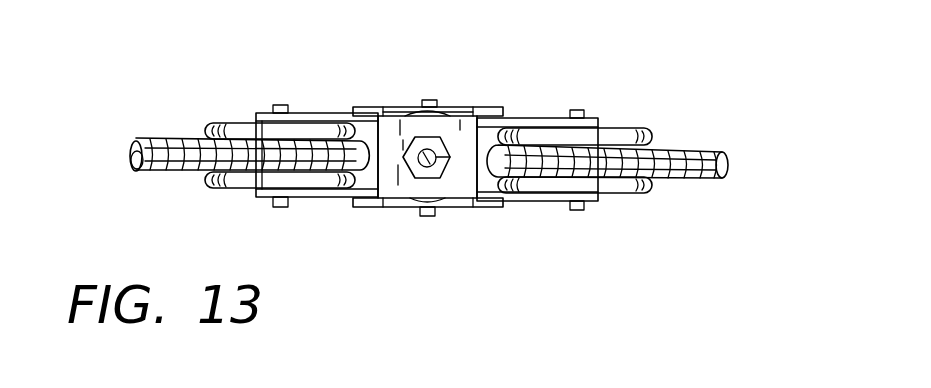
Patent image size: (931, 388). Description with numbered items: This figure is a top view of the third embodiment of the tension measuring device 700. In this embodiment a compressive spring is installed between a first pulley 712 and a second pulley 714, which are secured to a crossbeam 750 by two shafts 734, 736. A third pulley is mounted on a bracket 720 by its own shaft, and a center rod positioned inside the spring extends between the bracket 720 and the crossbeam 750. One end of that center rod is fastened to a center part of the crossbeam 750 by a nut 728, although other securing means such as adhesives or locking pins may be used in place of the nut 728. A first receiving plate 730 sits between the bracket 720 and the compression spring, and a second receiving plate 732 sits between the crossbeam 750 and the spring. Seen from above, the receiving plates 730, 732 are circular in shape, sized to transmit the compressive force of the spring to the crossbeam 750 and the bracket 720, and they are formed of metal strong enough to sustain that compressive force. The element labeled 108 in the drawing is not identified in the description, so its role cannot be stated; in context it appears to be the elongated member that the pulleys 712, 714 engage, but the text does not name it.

The tension measuring device 700 is at (455, 139).
The bracket 720 is at (370, 98).
The second receiving plate 732 is at (439, 108).
The crossbeam 750 is at (543, 117).
The shaft 734 is at (279, 106).
The shaft 736 is at (578, 110).
The threaded rod 108 is at (677, 152).
The first pulley 712 is at (237, 189).
The second pulley 714 is at (632, 193).
The nut 728 is at (423, 165).
The first receiving plate 730 is at (457, 208).